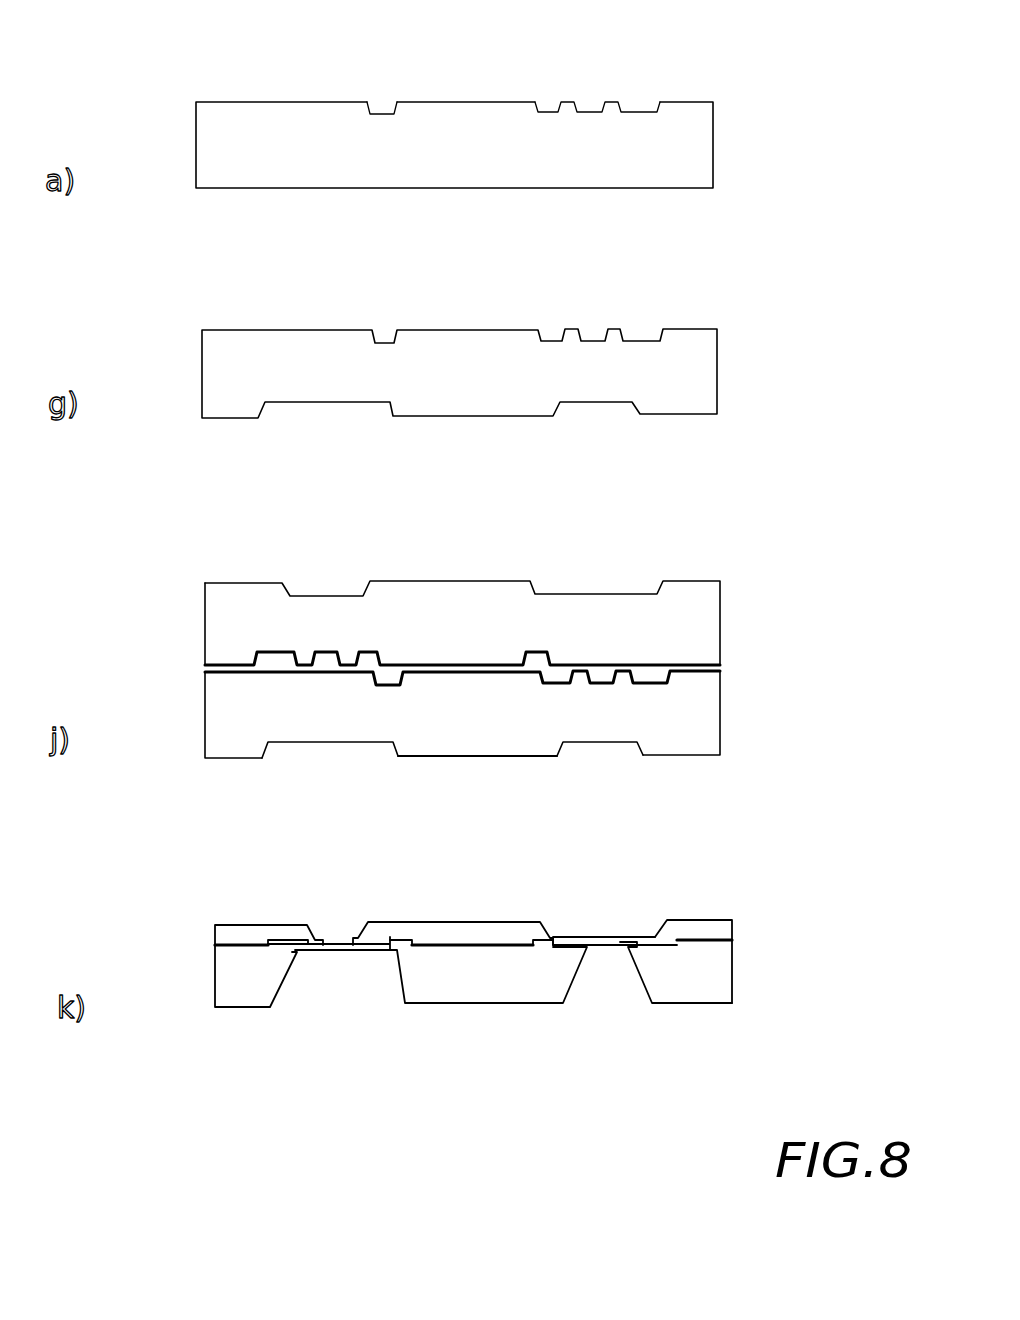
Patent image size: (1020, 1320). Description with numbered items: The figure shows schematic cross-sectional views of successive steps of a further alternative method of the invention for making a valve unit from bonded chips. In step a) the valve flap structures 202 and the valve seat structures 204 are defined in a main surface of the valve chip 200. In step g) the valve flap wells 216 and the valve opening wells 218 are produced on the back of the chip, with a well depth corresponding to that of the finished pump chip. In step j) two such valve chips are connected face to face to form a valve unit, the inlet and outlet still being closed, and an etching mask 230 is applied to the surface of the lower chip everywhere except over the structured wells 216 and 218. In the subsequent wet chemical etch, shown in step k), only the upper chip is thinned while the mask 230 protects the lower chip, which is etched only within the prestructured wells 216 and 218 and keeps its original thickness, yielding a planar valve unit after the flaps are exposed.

The valve chip 200 is at (713, 140).
The valve flap structures 202 is at (380, 104).
The valve seat structures 204 is at (589, 100).
The valve flap wells 216 is at (335, 753).
The etching mask 230 is at (480, 767).
The valve opening wells 218 is at (597, 748).